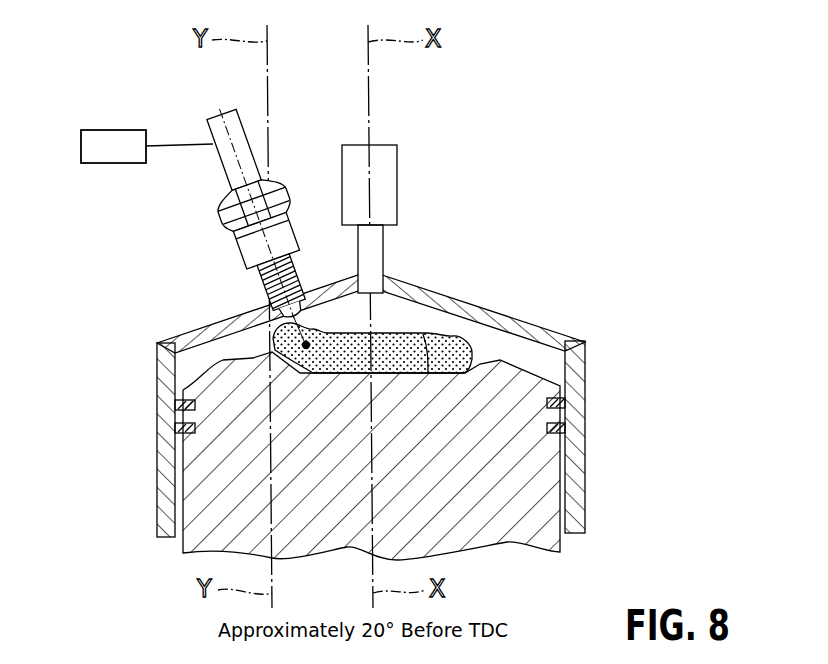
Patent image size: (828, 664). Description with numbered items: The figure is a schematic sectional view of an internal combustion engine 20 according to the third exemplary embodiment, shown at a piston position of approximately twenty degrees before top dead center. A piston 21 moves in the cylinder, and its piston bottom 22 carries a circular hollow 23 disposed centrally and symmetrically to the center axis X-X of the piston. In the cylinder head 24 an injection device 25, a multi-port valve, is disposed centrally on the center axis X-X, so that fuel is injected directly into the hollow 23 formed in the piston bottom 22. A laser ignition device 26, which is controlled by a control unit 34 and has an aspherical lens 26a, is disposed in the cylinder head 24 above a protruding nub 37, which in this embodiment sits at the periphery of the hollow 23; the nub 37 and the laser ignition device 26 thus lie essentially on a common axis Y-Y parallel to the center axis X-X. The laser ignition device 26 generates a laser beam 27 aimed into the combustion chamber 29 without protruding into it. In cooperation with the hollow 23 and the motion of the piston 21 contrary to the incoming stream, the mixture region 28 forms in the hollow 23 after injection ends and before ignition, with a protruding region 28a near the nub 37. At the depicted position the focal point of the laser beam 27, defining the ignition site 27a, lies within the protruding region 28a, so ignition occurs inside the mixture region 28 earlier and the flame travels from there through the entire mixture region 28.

The internal combustion engine 20 is at (124, 311).
The piston 21 is at (545, 457).
The piston bottom 22 is at (558, 364).
The circular hollow 23 is at (455, 345).
The cylinder head 24 is at (537, 358).
The injection device 25 is at (397, 165).
The laser ignition device 26 is at (212, 117).
The aspherical lens 26a is at (300, 266).
The laser beam 27 is at (254, 336).
The ignition site 27a is at (322, 322).
The mixture region 28 is at (520, 335).
The protruding region 28a is at (235, 318).
The combustion chamber 29 is at (566, 336).
The control unit 34 is at (109, 142).
The protruding nub 37 is at (263, 367).